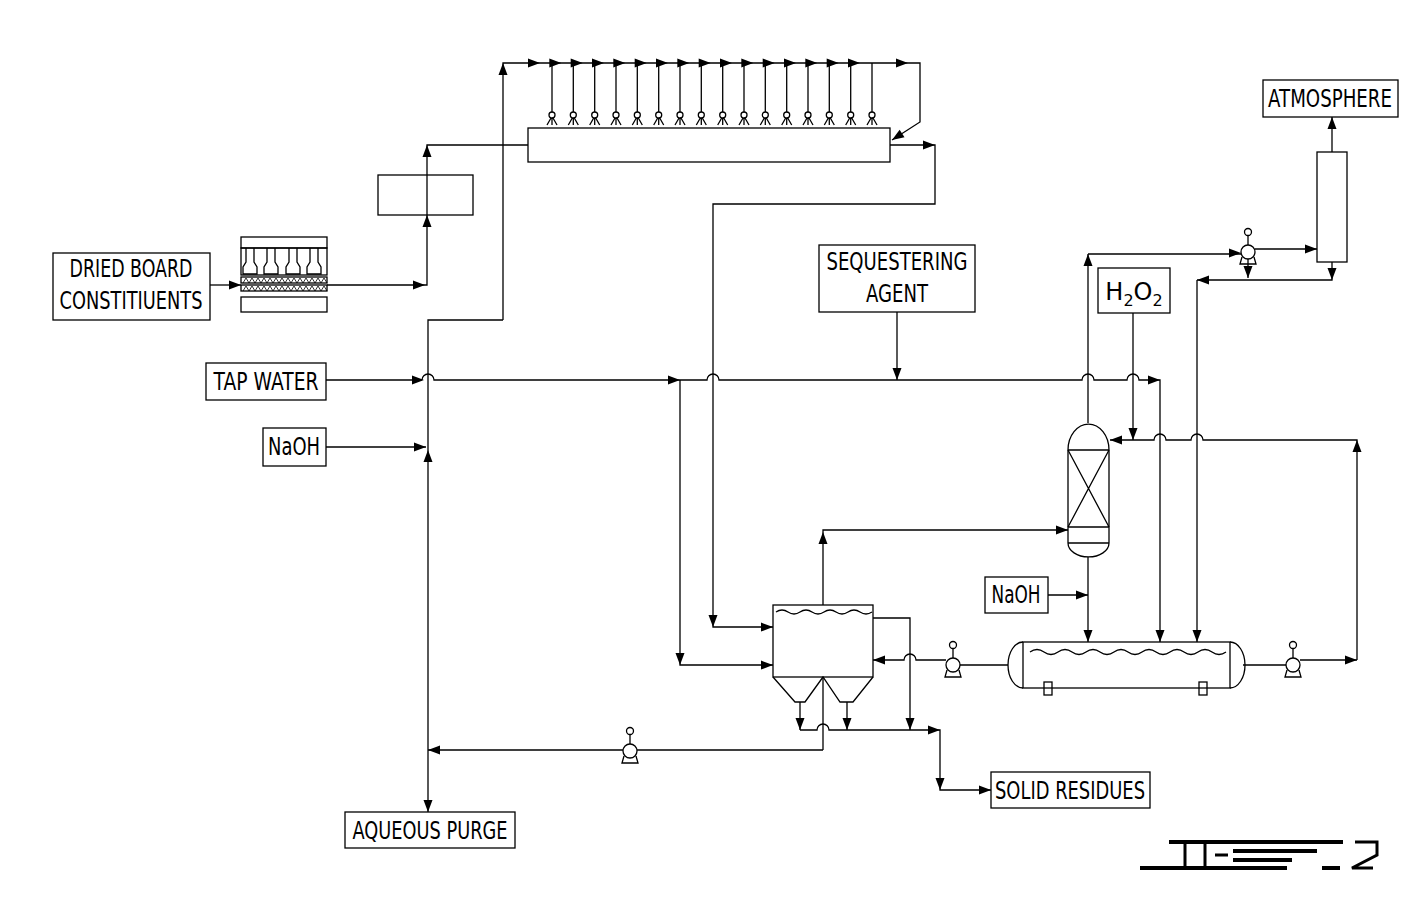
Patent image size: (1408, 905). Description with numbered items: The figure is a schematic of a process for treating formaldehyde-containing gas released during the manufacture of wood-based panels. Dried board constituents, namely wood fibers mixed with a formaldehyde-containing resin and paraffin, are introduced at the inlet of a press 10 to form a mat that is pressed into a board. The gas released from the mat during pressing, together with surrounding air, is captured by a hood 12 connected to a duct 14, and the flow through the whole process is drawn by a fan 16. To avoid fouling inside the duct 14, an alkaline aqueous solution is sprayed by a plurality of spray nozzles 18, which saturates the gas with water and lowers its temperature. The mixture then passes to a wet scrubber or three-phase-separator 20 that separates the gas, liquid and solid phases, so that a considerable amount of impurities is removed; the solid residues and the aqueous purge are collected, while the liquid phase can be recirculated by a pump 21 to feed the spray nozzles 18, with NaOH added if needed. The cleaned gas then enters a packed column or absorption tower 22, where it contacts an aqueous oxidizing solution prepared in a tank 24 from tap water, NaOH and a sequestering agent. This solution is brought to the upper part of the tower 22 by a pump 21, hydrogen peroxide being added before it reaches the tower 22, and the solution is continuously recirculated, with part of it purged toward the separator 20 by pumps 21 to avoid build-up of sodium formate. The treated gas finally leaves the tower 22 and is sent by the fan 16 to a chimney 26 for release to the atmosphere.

The press 10 is at (264, 237).
The hood 12 is at (404, 175).
The duct 14 is at (694, 157).
The fan 16 is at (1243, 250).
The spray nozzles 18 is at (722, 110).
The three-phase-separator 20 is at (808, 657).
The pump 21 is at (960, 672).
The absorption tower 22 is at (1066, 489).
The tank 24 is at (1120, 672).
The chimney 26 is at (1330, 207).